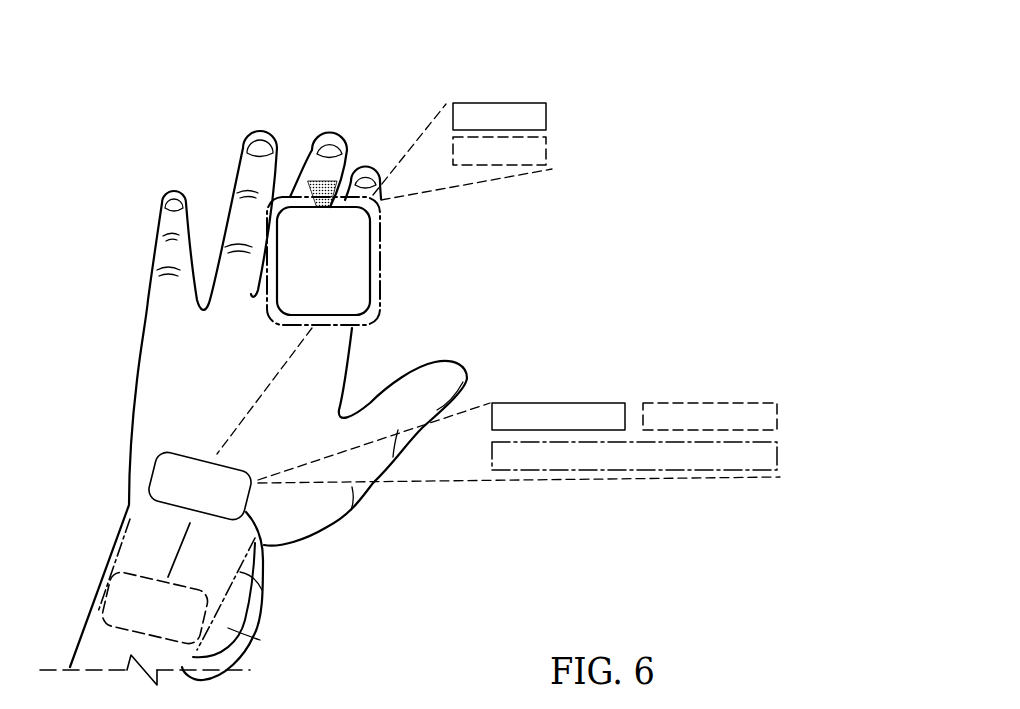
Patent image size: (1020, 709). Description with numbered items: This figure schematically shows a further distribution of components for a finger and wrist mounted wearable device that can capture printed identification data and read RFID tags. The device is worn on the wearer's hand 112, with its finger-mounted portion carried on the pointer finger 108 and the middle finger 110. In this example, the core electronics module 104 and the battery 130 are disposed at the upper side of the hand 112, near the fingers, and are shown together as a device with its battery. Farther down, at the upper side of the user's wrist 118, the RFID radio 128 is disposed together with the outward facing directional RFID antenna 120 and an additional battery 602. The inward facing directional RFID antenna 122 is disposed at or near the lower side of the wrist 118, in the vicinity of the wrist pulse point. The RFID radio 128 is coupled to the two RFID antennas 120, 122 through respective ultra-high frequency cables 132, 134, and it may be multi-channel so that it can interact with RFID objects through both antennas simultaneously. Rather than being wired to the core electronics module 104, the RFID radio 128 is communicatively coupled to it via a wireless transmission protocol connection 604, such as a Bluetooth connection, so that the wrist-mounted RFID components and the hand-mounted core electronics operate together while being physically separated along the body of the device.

The core electronics module 104 is at (547, 117).
The pointer finger 108 is at (373, 163).
The middle finger 110 is at (317, 132).
The hand 112 is at (137, 184).
The wrist 118 is at (98, 528).
The outward facing directional RFID antenna 120 is at (152, 486).
The inward facing directional RFID antenna 122 is at (256, 606).
The RFID radio 128 is at (108, 602).
The battery 130 is at (547, 152).
The UHF cable 132 is at (140, 517).
The UHF cable 134 is at (253, 630).
The additional battery 602 is at (778, 456).
The wireless transmission protocol connection 604 is at (262, 384).